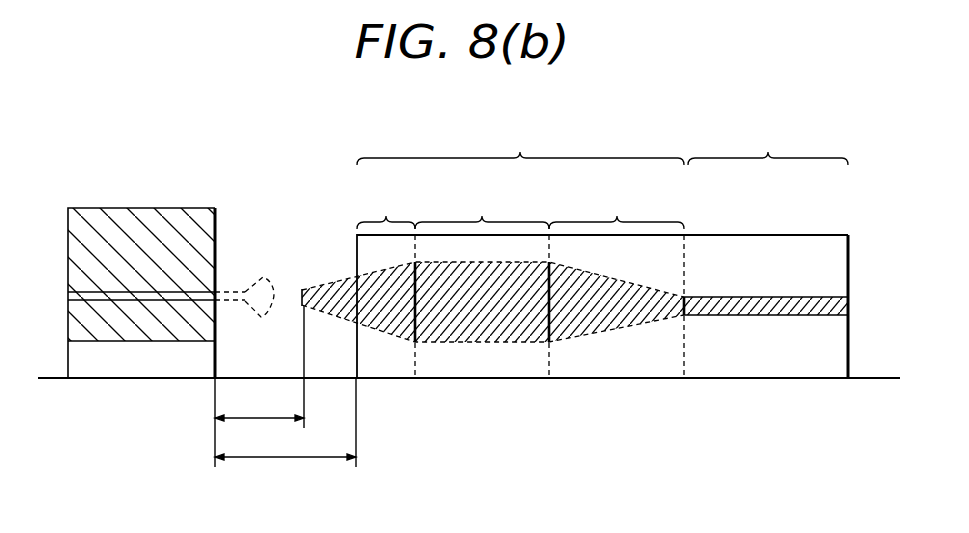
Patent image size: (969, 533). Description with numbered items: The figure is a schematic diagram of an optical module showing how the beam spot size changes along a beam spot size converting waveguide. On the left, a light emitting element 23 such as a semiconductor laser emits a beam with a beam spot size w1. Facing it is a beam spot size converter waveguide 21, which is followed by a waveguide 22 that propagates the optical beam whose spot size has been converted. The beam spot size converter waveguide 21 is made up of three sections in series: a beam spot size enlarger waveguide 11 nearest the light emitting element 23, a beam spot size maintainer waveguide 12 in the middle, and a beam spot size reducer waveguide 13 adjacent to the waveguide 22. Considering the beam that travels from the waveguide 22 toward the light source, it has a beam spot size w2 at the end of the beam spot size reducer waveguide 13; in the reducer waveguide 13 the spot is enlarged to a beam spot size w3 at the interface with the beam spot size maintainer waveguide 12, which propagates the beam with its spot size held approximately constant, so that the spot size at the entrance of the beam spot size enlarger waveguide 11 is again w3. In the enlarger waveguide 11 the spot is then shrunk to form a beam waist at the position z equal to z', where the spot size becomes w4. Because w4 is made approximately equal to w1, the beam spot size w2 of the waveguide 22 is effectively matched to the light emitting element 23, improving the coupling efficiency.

The light emitting element 23 is at (142, 215).
The beam spot size converter waveguide 21 is at (520, 147).
The waveguide 22 is at (766, 223).
The beam spot size enlarger waveguide 11 is at (386, 285).
The beam spot size maintainer waveguide 12 is at (482, 285).
The beam spot size reducer waveguide 13 is at (616, 286).
The beam spot size w1 is at (216, 293).
The beam spot size w2 is at (684, 316).
The beam spot size w3 is at (415, 342).
The beam spot size w4 is at (302, 290).
The position z is at (285, 446).
The beam waist position z' is at (259, 407).